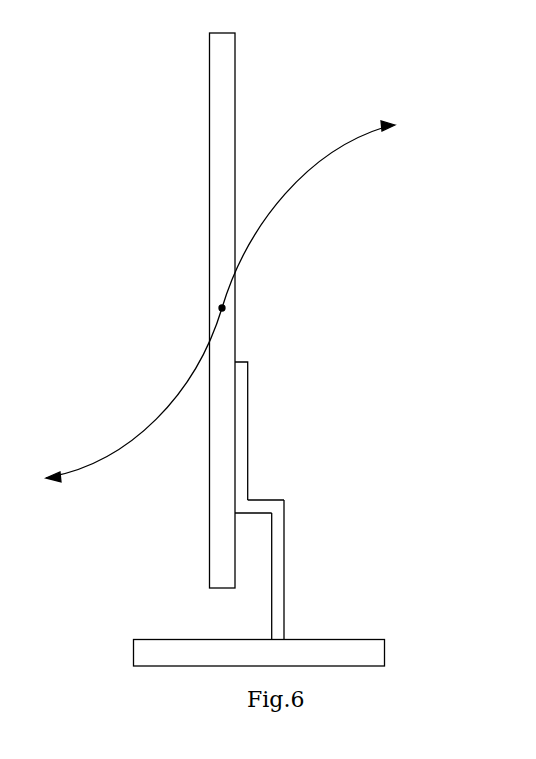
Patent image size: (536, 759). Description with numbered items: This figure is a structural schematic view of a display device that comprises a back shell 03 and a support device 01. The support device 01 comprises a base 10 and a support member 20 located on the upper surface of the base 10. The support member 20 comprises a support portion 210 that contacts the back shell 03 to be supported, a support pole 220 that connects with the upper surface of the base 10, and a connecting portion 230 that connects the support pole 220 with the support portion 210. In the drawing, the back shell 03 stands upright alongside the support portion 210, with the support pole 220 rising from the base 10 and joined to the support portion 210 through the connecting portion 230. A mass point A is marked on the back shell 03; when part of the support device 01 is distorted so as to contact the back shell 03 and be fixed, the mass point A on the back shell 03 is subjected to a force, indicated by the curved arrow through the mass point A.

The support device 01 is at (284, 349).
The back shell 03 is at (222, 109).
The base 10 is at (259, 618).
The support member 20 is at (307, 500).
The support portion 210 is at (238, 438).
The support pole 220 is at (277, 573).
The connecting portion 230 is at (267, 505).
The mass point A is at (206, 307).